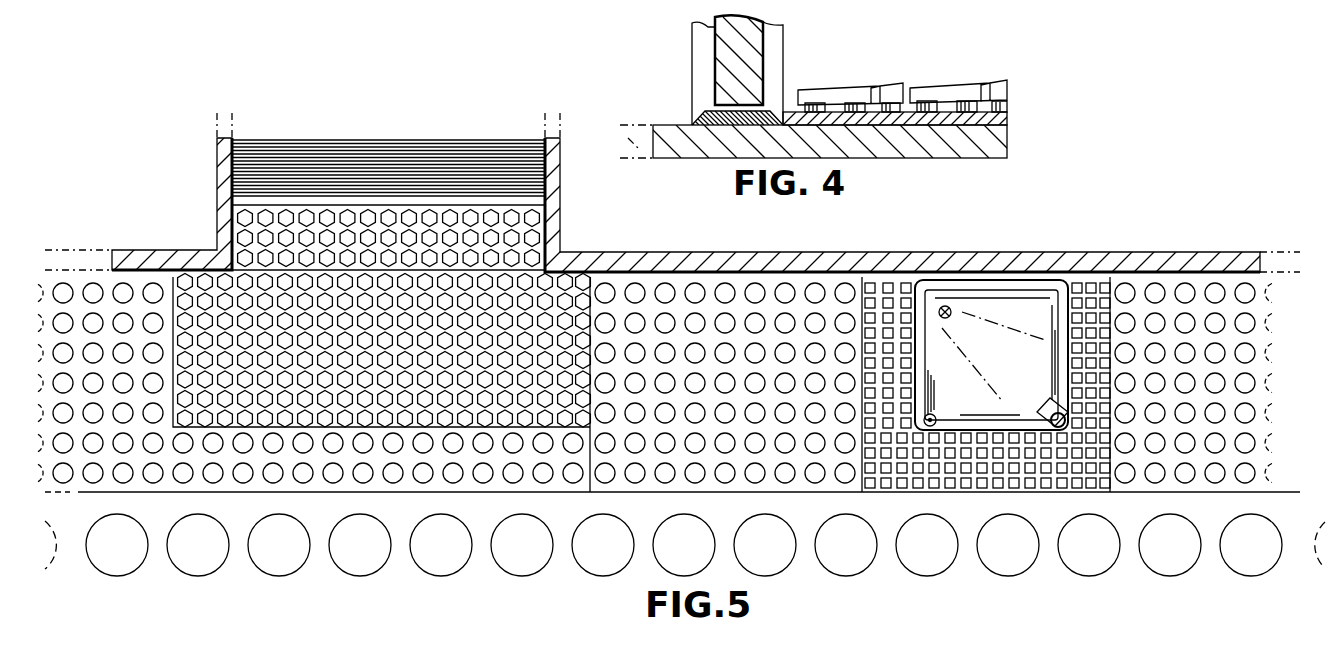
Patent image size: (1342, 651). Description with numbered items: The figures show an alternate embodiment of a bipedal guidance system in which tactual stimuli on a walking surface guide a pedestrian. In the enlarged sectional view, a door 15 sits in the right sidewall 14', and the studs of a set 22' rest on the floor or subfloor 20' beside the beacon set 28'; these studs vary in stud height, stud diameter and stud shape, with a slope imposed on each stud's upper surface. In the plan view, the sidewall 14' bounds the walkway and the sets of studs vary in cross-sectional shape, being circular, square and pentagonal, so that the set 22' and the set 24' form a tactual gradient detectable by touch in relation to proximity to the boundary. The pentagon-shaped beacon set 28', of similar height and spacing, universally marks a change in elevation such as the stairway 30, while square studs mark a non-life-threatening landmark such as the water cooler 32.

In FIG. 4, the right sidewall 14' is at (754, 70).
In FIG. 5, the right sidewall 14' is at (693, 196).
In FIG. 4, the door 15 is at (748, 42).
In FIG. 4, the floor or subfloor 20' is at (818, 157).
In FIG. 4, the set of studs 22' is at (902, 78).
In FIG. 5, the set of studs 22' is at (725, 353).
In FIG. 4, the beacon set of studs 28' is at (897, 88).
In FIG. 5, the beacon set of studs 28' is at (645, 346).
In FIG. 5, the stairway 30 is at (425, 160).
In FIG. 5, the water cooler 32 is at (993, 298).
In FIG. 5, the set of studs 24' is at (685, 563).